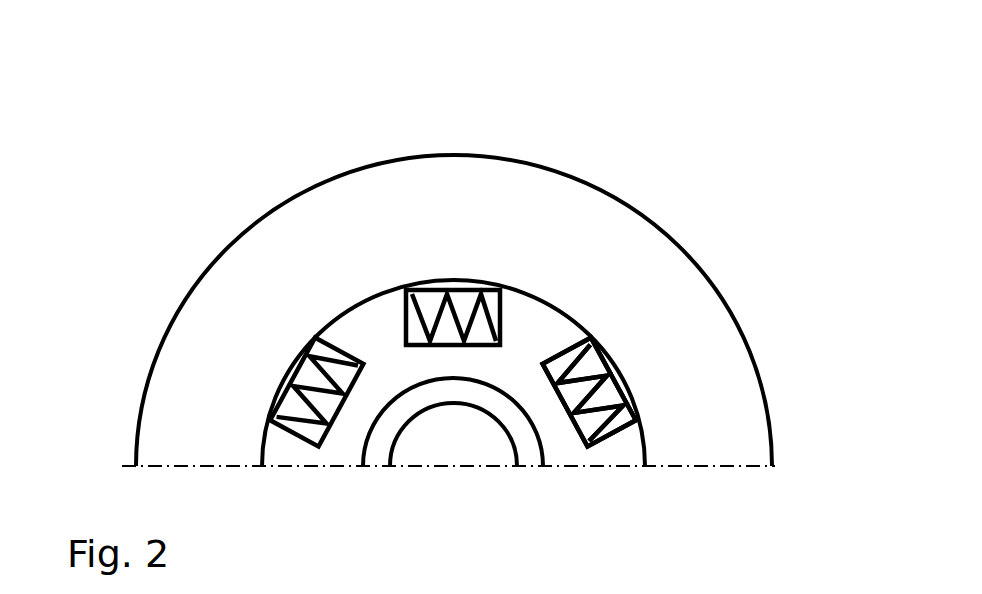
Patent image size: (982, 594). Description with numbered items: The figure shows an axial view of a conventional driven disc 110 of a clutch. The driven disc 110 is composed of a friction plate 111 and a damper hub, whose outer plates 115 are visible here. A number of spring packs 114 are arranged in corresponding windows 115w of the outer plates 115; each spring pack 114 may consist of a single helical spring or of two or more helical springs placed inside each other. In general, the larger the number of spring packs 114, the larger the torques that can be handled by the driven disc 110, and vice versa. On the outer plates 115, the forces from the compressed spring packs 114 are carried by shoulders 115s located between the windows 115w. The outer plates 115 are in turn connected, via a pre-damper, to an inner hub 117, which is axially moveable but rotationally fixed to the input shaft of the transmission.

The driven disc 110 is at (448, 143).
The friction plate 111 is at (247, 292).
The spring packs 114 is at (613, 413).
The outer plates 115 is at (505, 367).
The shoulders 115s is at (377, 328).
The windows 115w is at (502, 308).
The inner hub 117 is at (385, 455).